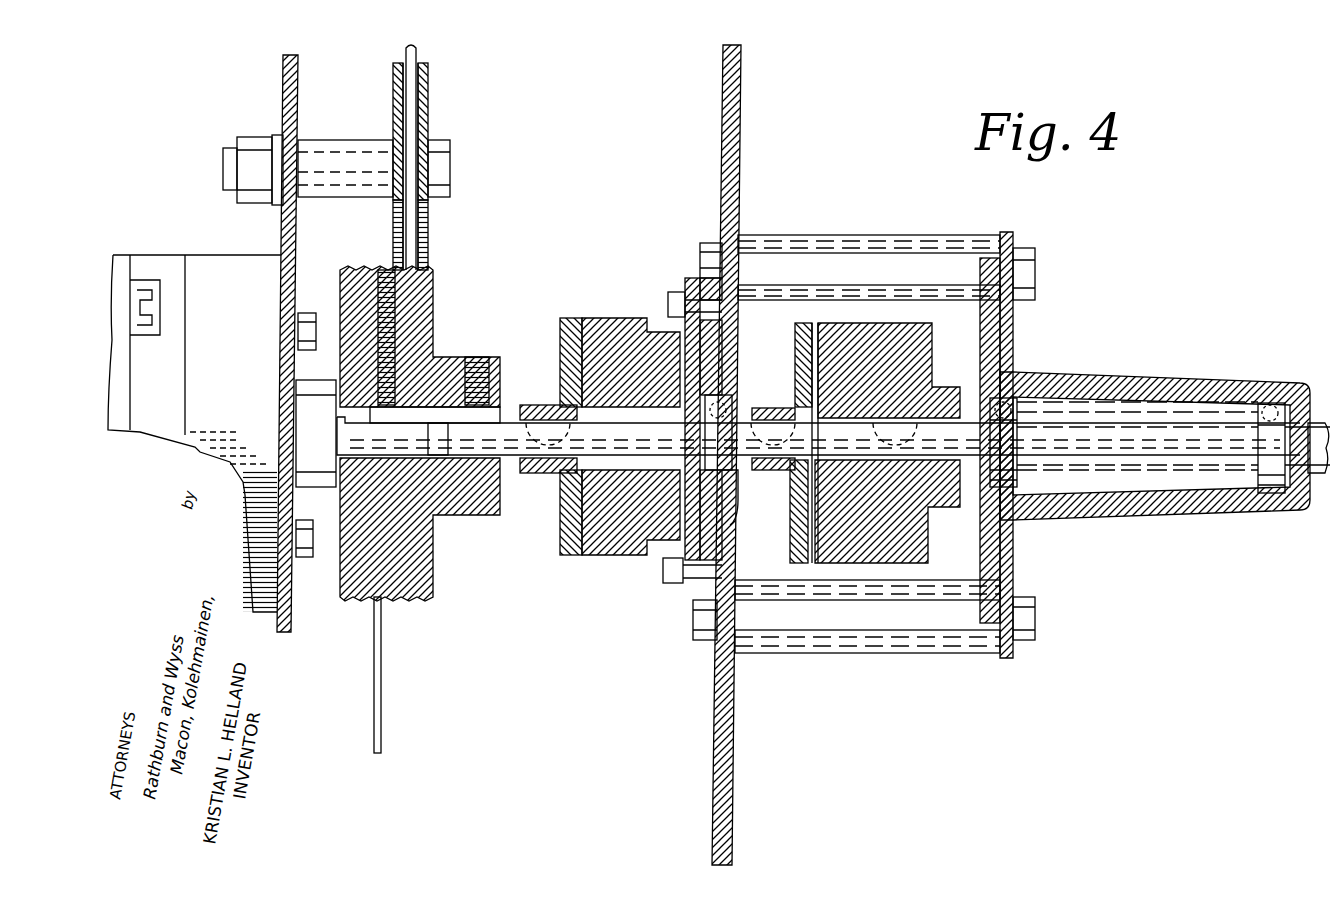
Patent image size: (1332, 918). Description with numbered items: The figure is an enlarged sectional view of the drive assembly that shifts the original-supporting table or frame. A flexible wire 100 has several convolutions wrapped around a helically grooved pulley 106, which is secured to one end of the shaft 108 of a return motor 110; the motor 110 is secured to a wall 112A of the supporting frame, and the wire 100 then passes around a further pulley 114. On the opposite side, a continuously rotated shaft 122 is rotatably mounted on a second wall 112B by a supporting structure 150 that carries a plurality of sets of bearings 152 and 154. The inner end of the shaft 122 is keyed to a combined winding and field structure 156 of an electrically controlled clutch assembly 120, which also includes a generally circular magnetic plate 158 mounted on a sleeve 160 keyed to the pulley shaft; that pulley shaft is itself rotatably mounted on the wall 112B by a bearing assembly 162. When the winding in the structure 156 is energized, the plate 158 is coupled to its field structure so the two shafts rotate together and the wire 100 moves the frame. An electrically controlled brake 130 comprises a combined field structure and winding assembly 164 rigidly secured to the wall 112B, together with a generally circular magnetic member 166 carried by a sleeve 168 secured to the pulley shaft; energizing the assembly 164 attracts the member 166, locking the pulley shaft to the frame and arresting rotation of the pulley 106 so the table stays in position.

The wire 100 is at (418, 48).
The pulley 106 is at (428, 565).
The shaft 108 is at (345, 432).
The return motor 110 is at (130, 268).
The wall 112A is at (283, 103).
The wall 112B is at (730, 125).
The pulley 114 is at (428, 108).
The clutch assembly 120 is at (945, 342).
The shaft 122 is at (1113, 437).
The brake 130 is at (585, 283).
The supporting structure 150 is at (1057, 372).
The bearings 152 is at (1020, 487).
The bearings 154 is at (1256, 505).
The combined winding and field structure 156 is at (868, 325).
The magnetic plate 158 is at (803, 322).
The sleeve 160 is at (771, 408).
The bearing assembly 162 is at (735, 520).
The combined field structure and winding assembly 164 is at (630, 300).
The magnetic member 166 is at (560, 322).
The sleeve 168 is at (535, 405).